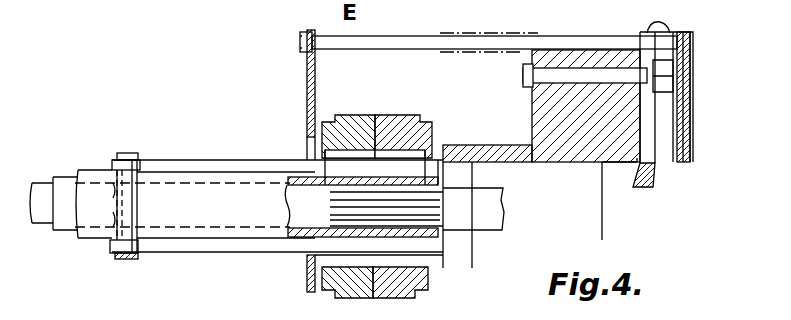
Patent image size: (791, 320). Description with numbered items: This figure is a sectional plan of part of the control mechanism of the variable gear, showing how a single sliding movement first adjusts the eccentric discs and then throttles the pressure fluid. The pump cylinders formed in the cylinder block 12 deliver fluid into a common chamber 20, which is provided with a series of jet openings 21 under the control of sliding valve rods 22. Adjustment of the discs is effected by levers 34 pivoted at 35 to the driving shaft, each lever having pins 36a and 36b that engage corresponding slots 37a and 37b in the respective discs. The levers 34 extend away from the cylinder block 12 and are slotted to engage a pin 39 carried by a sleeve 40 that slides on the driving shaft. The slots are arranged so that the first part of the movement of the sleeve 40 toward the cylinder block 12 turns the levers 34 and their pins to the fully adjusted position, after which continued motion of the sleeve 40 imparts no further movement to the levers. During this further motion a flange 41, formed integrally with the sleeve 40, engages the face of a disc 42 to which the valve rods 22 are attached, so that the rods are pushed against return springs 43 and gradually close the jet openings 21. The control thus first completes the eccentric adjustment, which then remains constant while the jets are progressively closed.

The cylinder block 12 is at (538, 128).
The common chamber 20 is at (672, 110).
The jet openings 21 is at (684, 38).
The sliding valve rods 22 is at (318, 48).
The levers 34 is at (238, 163).
The pivot 35 is at (367, 218).
The pin 36a is at (352, 152).
The pin 36b is at (405, 153).
The slot 37a is at (328, 152).
The slot 37b is at (427, 158).
The pin 39 is at (133, 153).
The sleeve 40 is at (115, 168).
The flange 41 is at (140, 207).
The disc 42 is at (309, 100).
The return springs 43 is at (497, 33).